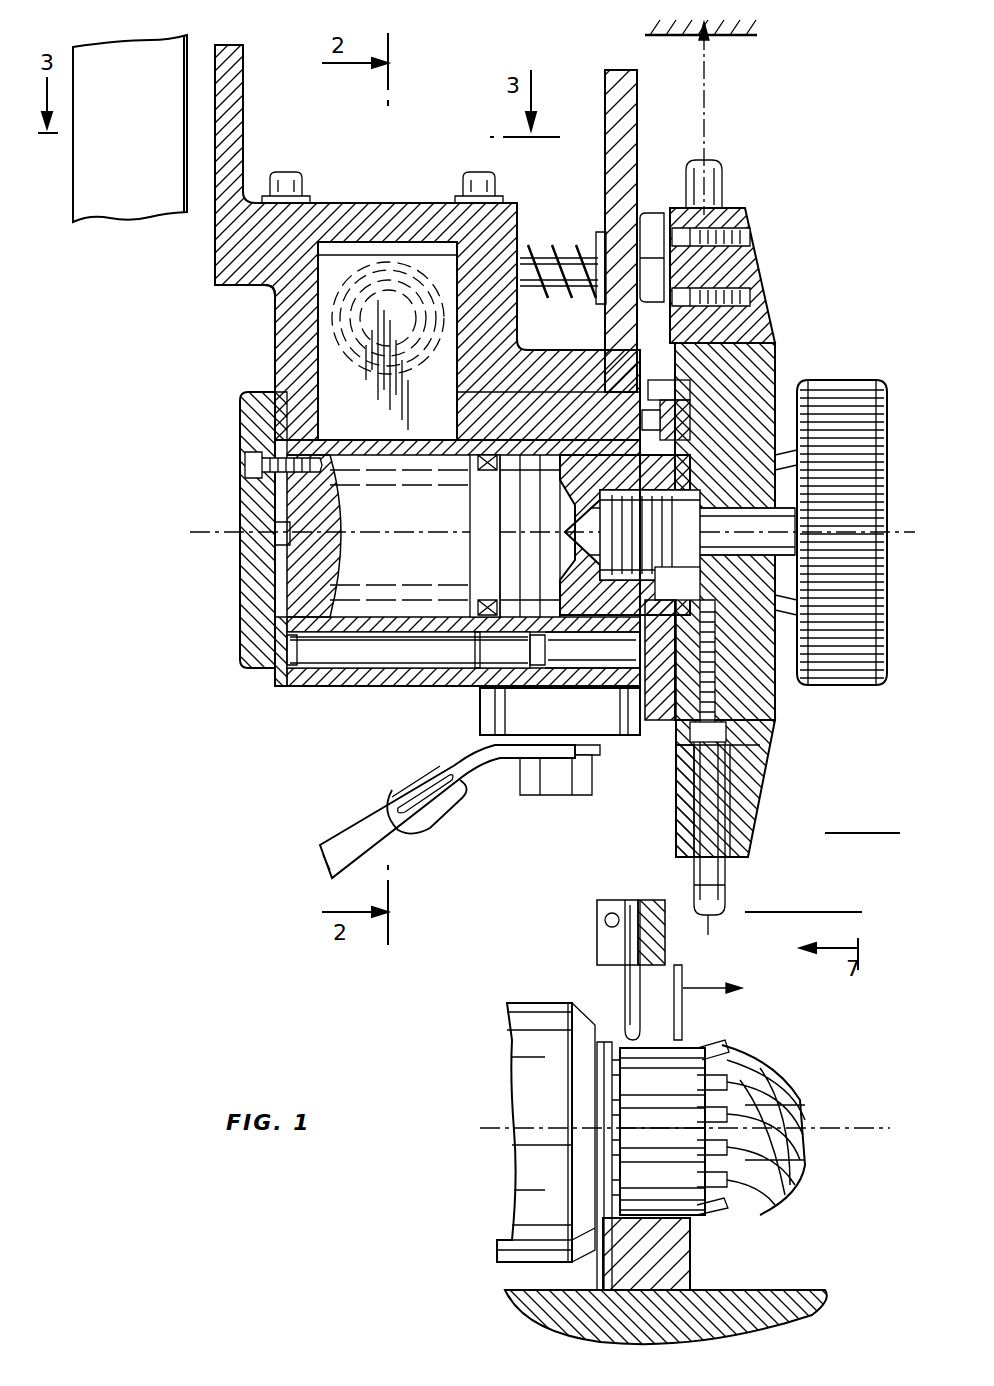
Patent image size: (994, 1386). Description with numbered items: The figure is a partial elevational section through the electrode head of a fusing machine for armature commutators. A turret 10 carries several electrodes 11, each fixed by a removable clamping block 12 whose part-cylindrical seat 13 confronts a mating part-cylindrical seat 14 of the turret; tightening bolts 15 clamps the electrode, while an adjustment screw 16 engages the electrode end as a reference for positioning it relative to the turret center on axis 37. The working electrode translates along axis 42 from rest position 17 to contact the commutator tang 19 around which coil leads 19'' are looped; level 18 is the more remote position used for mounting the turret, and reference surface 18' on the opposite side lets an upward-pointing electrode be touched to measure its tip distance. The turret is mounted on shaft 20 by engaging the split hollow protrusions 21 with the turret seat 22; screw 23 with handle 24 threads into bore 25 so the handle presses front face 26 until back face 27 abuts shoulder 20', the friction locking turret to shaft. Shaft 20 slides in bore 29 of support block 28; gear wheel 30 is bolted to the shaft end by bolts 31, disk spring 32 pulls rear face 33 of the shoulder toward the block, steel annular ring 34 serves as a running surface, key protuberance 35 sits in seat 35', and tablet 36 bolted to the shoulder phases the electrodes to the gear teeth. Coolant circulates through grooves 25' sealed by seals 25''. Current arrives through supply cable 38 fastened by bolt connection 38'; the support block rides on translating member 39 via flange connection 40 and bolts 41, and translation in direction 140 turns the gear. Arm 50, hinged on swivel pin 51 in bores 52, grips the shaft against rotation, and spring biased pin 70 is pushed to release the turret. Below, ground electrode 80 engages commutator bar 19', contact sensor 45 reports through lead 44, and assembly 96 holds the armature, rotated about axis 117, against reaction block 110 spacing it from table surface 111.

The turret 10 is at (762, 372).
The electrode 11 is at (724, 176).
The clamping block 12 is at (758, 280).
The part-cylindrical seat 13 is at (742, 828).
The part-cylindrical seat 14 is at (690, 834).
The bolts 15 is at (748, 240).
The adjustment screw 16 is at (773, 764).
The rest position 17 is at (816, 912).
The level 18 is at (862, 815).
The reference surface 18' is at (709, 42).
The commutator tang 19 is at (693, 1115).
The commutator bar 19' is at (582, 1131).
The coil leads 19'' is at (769, 1127).
The shaft 20 is at (457, 563).
The shoulder 20' is at (654, 696).
The hollow protrusions 21 is at (667, 602).
The seat 22 is at (695, 472).
The screw 23 is at (735, 550).
The handle 24 is at (850, 384).
The threaded bore 25 is at (655, 526).
The grooves 25' is at (492, 536).
The seals 25'' is at (528, 648).
The front face 26 is at (730, 702).
The back face 27 is at (722, 642).
The support block 28 is at (320, 418).
The bore 29 is at (460, 440).
The gear wheel 30 is at (240, 586).
The bolts 31 is at (245, 465).
The disk spring 32 is at (280, 662).
The rear face 33 is at (622, 700).
The steel annular ring 34 is at (632, 668).
The key protuberance 35 is at (240, 468).
The seat 35' is at (335, 536).
The tablet 36 is at (660, 392).
The axis 37 is at (887, 532).
The supply cable 38 is at (447, 811).
The bolt connection 38' is at (556, 793).
The translating member 39 is at (233, 262).
The flange connection 40 is at (275, 380).
The bolts 41 is at (305, 186).
The axis 42 is at (710, 920).
The lead 44 is at (685, 992).
The movable contact sensor 45 is at (683, 975).
The arm 50 is at (404, 680).
The swivel pin 51 is at (367, 650).
The bores 52 is at (300, 672).
The spring biased pin 70 is at (552, 250).
The ground electrode 80 is at (628, 982).
The assembly 96 is at (487, 1191).
The reaction block 110 is at (694, 1256).
The table surface 111 is at (786, 1290).
The axis 117 is at (806, 1132).
The direction 140 is at (710, 100).